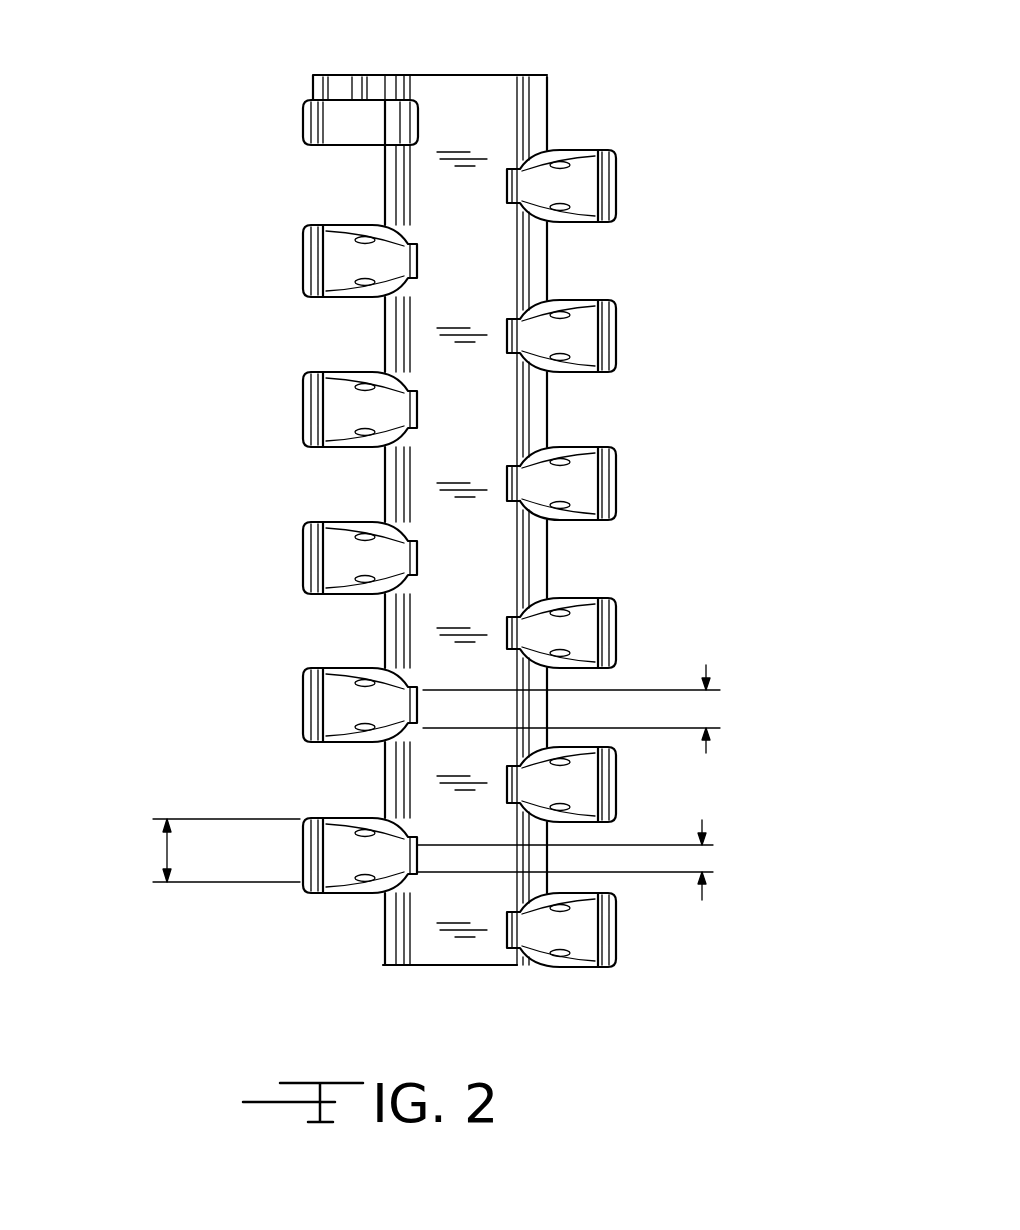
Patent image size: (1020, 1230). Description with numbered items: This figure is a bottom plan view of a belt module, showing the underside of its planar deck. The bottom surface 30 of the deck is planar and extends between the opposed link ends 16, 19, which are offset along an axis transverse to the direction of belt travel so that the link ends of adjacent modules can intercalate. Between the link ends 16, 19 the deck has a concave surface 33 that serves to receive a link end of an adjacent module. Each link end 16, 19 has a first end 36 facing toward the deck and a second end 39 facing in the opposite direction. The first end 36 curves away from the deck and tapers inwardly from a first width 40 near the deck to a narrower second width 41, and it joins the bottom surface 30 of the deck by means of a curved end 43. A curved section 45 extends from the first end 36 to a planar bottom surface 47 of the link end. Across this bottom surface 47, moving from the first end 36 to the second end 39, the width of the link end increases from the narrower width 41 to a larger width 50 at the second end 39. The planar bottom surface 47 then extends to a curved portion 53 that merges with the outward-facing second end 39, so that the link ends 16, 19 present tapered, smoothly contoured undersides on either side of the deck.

The bottom surface 30 is at (498, 108).
The link end 16 is at (634, 168).
The concave surface 33 is at (536, 257).
The link end 19 is at (288, 262).
The second end 39 is at (286, 424).
The first end 36 is at (430, 407).
The curved section 45 is at (518, 470).
The planar bottom surface 47 is at (556, 481).
The curved end 43 is at (509, 633).
The curved portion 53 is at (300, 714).
The first width 40 is at (708, 712).
The second width 41 is at (696, 862).
The larger width 50 is at (166, 850).